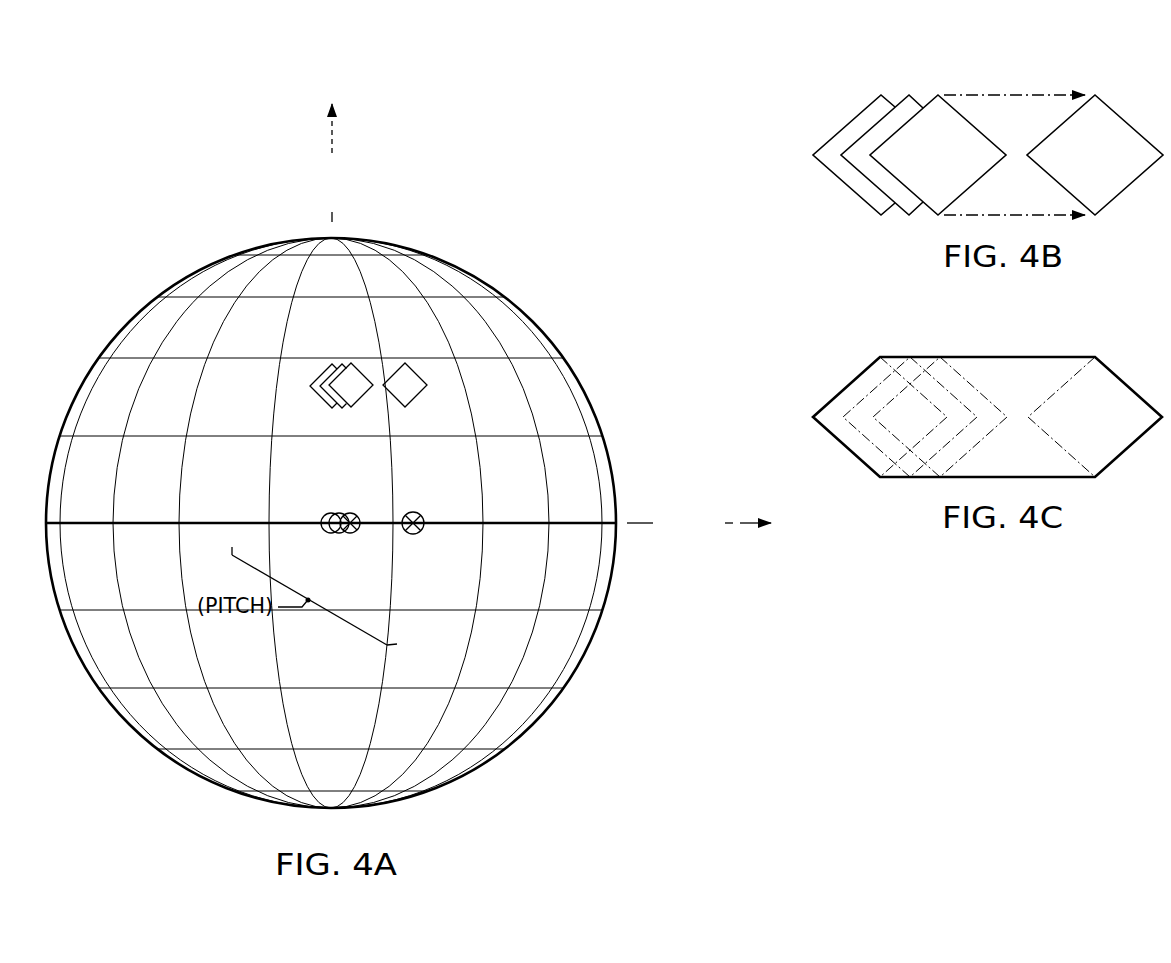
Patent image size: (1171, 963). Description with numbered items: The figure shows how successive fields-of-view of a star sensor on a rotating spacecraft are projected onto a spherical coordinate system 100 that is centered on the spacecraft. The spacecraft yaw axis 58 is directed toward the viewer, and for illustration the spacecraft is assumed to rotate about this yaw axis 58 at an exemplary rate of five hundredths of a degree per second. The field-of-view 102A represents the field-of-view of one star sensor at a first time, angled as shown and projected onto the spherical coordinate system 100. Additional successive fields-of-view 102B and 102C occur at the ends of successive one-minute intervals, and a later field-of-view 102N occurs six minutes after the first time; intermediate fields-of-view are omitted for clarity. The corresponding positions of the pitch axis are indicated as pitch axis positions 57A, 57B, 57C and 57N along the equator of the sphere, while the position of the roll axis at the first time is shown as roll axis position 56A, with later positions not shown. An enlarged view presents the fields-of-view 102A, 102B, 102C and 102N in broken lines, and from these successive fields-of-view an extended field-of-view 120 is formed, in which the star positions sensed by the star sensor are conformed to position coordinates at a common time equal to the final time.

In FIG. 4A, the spherical coordinate system 100 is at (127, 317).
In FIG. 4A, the yaw axis 58 is at (338, 163).
In FIG. 4A, the roll axis position 56A is at (408, 538).
In FIG. 4A, the pitch axis position 57A is at (323, 528).
In FIG. 4A, the pitch axis position 57B is at (336, 536).
In FIG. 4A, the pitch axis position 57C is at (350, 536).
In FIG. 4A, the pitch axis position 57N is at (412, 537).
In FIG. 4A, the field-of-view 102A is at (311, 380).
In FIG. 4B, the field-of-view 102A is at (846, 116).
In FIG. 4A, the field-of-view 102B is at (329, 371).
In FIG. 4B, the field-of-view 102B is at (897, 94).
In FIG. 4A, the field-of-view 102C is at (348, 365).
In FIG. 4B, the field-of-view 102C is at (933, 90).
In FIG. 4A, the field-of-view 102N is at (400, 365).
In FIG. 4B, the field-of-view 102N is at (1103, 90).
In FIG. 4C, the extended field-of-view 120 is at (981, 355).